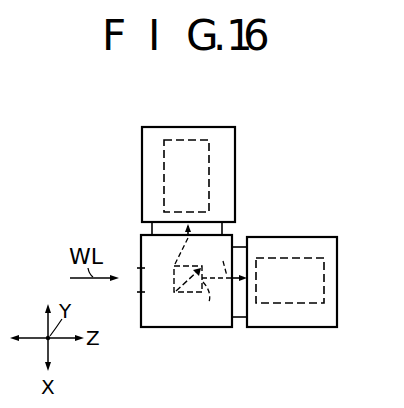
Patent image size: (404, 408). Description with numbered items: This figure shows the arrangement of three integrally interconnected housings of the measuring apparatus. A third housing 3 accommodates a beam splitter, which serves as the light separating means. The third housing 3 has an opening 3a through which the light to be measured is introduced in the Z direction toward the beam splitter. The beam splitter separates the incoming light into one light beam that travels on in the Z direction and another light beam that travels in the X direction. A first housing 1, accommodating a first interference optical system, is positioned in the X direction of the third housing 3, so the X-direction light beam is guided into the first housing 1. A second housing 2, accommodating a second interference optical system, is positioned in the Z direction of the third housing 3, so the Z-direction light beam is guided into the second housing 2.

The first housing 1 is at (232, 152).
The second housing 2 is at (302, 241).
The third housing 3 is at (187, 328).
The opening 3a is at (140, 278).